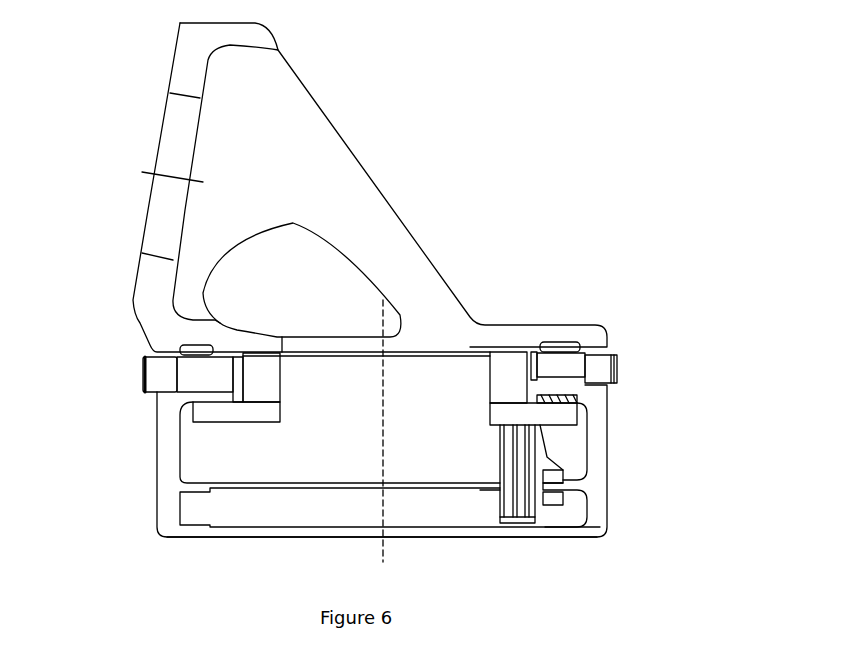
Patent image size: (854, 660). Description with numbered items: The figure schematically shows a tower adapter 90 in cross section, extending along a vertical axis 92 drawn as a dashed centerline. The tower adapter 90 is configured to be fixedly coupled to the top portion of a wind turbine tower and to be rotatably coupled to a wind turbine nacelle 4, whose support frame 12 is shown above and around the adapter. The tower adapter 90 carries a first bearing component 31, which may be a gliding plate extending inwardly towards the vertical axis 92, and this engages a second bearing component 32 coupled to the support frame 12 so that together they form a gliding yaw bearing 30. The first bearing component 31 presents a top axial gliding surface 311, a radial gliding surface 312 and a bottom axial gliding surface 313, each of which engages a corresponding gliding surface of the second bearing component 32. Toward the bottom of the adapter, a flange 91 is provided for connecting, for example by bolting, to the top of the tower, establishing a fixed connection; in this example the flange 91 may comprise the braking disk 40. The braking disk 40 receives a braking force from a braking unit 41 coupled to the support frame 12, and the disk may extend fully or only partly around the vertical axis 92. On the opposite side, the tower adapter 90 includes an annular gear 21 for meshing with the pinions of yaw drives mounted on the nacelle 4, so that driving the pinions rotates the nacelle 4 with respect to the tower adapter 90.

The wind turbine nacelle 4 is at (392, 197).
The support frame 12 is at (448, 298).
The annular gear 21 is at (155, 380).
The gliding yaw bearing 30 is at (605, 317).
The first bearing component 31 is at (210, 373).
The top axial gliding surface 311 is at (580, 347).
The radial gliding surface 312 is at (615, 375).
The bottom axial gliding surface 313 is at (570, 387).
The second bearing component 32 is at (510, 360).
The braking disk 40 is at (200, 492).
The braking unit 41 is at (547, 517).
The tower adapter 90 is at (180, 433).
The flange 91 is at (177, 540).
The vertical axis 92 is at (378, 442).